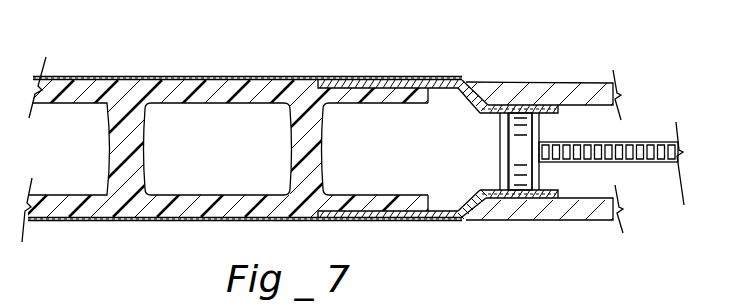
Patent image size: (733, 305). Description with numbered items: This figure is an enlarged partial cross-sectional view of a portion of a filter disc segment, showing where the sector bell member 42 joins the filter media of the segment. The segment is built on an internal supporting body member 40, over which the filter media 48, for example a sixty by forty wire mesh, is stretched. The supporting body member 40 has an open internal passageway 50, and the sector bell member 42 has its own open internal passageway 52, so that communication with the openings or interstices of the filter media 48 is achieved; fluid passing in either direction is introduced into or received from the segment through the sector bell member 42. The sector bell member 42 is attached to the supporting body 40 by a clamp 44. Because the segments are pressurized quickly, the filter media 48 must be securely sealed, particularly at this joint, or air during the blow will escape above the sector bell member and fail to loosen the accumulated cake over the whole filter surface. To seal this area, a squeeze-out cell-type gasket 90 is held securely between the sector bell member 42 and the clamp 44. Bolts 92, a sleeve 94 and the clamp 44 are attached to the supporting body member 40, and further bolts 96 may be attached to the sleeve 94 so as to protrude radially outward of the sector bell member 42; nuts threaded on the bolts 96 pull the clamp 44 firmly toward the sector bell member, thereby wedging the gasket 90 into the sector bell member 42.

The internal supporting body member 40 is at (145, 106).
The sector bell member 42 is at (538, 93).
The clamp 44 is at (380, 83).
The filter media 48 is at (107, 78).
The open internal passageway 50 is at (257, 170).
The open internal passageway 52 is at (603, 135).
The squeeze-out cell-type gasket 90 is at (484, 94).
The bolts 92 is at (511, 127).
The sleeve 94 is at (503, 153).
The bolts 96 is at (642, 141).